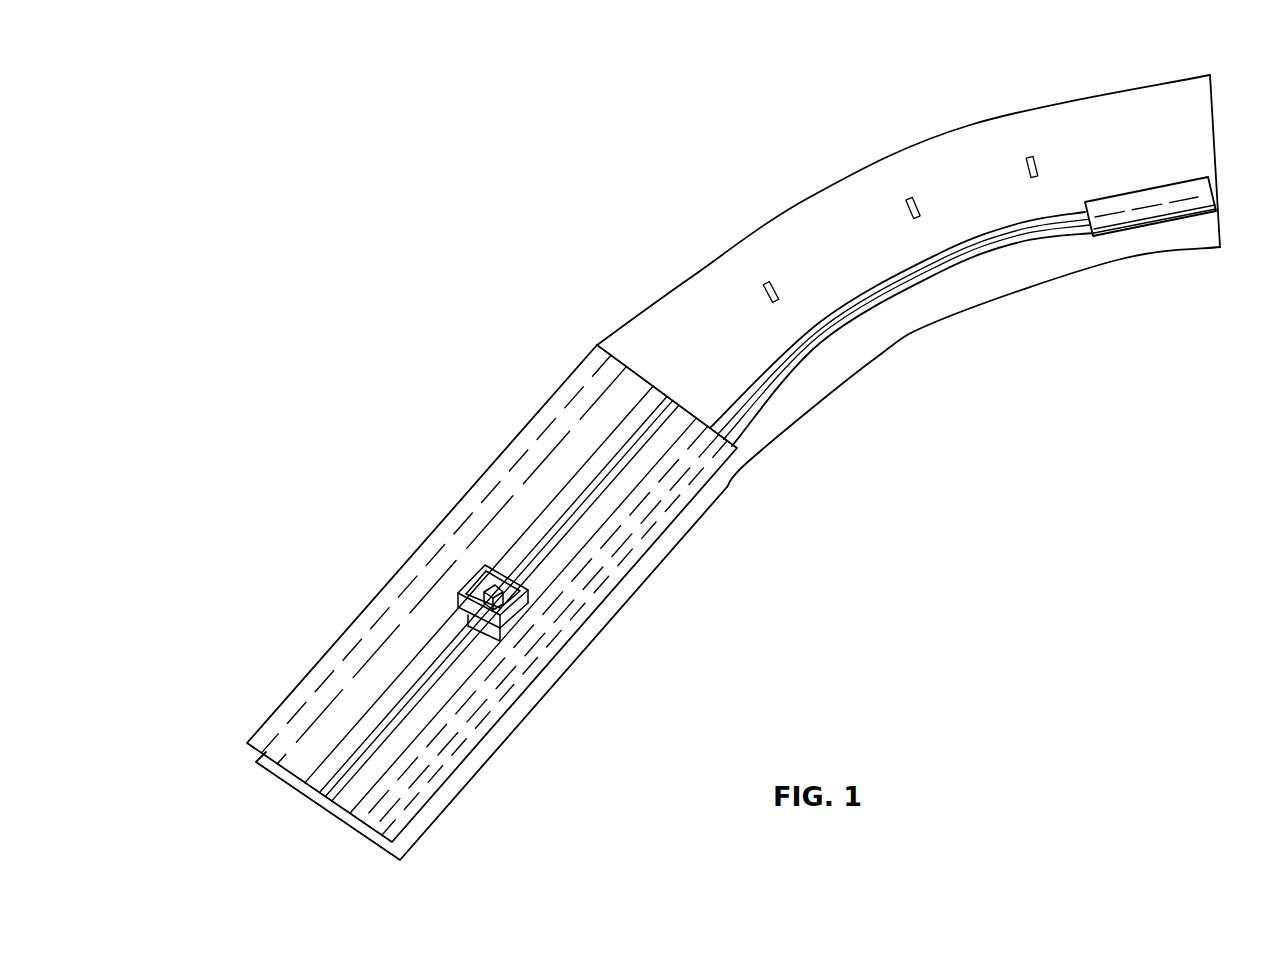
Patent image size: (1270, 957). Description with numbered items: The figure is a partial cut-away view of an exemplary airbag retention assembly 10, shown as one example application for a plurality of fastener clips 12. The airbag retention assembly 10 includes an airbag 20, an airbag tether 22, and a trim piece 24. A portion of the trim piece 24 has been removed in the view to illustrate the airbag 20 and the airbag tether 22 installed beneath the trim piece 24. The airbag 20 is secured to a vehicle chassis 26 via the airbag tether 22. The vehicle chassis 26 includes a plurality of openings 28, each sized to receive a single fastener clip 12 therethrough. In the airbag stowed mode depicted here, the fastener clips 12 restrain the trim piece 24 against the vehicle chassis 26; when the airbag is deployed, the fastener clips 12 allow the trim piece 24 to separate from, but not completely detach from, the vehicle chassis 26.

The airbag retention assembly 10 is at (369, 304).
The fastener clip 12 is at (497, 587).
The airbag 20 is at (1148, 212).
The airbag tether 22 is at (871, 302).
The trim piece 24 is at (587, 364).
The vehicle chassis 26 is at (855, 197).
The opening 28 is at (774, 288).